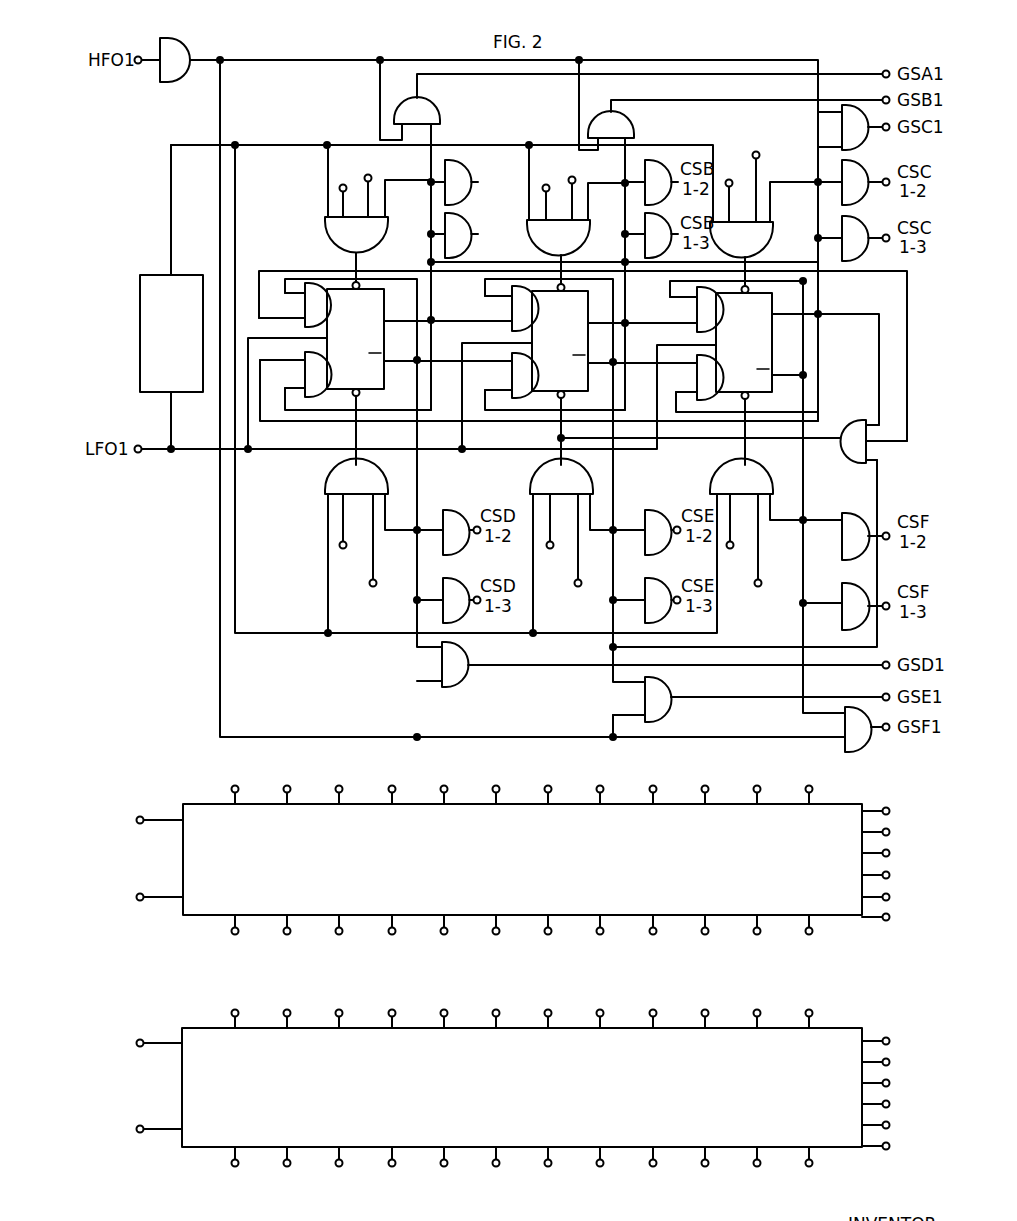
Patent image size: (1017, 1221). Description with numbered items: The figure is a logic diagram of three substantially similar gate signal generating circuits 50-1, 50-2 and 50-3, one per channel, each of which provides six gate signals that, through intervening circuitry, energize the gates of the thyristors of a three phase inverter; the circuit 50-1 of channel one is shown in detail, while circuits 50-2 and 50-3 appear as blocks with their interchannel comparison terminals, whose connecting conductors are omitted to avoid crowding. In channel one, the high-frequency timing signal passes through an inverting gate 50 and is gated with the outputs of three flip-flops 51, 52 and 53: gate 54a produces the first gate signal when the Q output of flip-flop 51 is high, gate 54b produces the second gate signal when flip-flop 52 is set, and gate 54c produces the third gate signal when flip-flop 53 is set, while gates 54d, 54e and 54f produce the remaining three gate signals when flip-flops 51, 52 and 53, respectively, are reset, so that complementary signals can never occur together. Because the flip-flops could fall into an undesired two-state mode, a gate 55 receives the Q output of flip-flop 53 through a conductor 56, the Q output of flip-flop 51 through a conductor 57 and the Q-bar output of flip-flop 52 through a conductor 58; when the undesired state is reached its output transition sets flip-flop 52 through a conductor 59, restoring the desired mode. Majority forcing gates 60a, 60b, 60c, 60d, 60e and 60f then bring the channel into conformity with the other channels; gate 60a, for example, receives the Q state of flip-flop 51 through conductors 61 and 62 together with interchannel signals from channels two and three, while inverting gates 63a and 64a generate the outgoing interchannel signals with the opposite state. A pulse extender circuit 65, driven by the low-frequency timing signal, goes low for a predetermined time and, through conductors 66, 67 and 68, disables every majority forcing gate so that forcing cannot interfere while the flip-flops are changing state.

The inverting gate 50 is at (188, 42).
The gate signal generating circuit 50-1 is at (955, 337).
The gate signal generating circuit 50-2 is at (546, 871).
The gate signal generating circuit 50-3 is at (546, 1098).
The flip-flop 51 is at (384, 309).
The flip-flop 52 is at (587, 311).
The flip-flop 53 is at (769, 297).
The gate 54a is at (432, 102).
The gate 54b is at (628, 118).
The gate 54c is at (866, 150).
The gate 54d is at (466, 683).
The gate 54e is at (669, 718).
The gate 54f is at (869, 752).
The gate 55 is at (866, 408).
The conductor 56 is at (879, 351).
The conductor 57 is at (539, 263).
The conductor 58 is at (878, 485).
The conductor 59 is at (826, 442).
The majority forcing gate 60a is at (325, 225).
The majority forcing gate 60b is at (598, 236).
The majority forcing gate 60c is at (768, 222).
The majority forcing gate 60d is at (325, 474).
The majority forcing gate 60e is at (530, 474).
The majority forcing gate 60f is at (710, 474).
The conductor 61 is at (431, 236).
The conductor 62 is at (424, 182).
The inverting gate 63a is at (450, 158).
The inverting gate 64a is at (450, 213).
The pulse extender circuit 65 is at (140, 342).
The conductor 66 is at (171, 197).
The conductor 67 is at (264, 143).
The conductor 68 is at (286, 632).